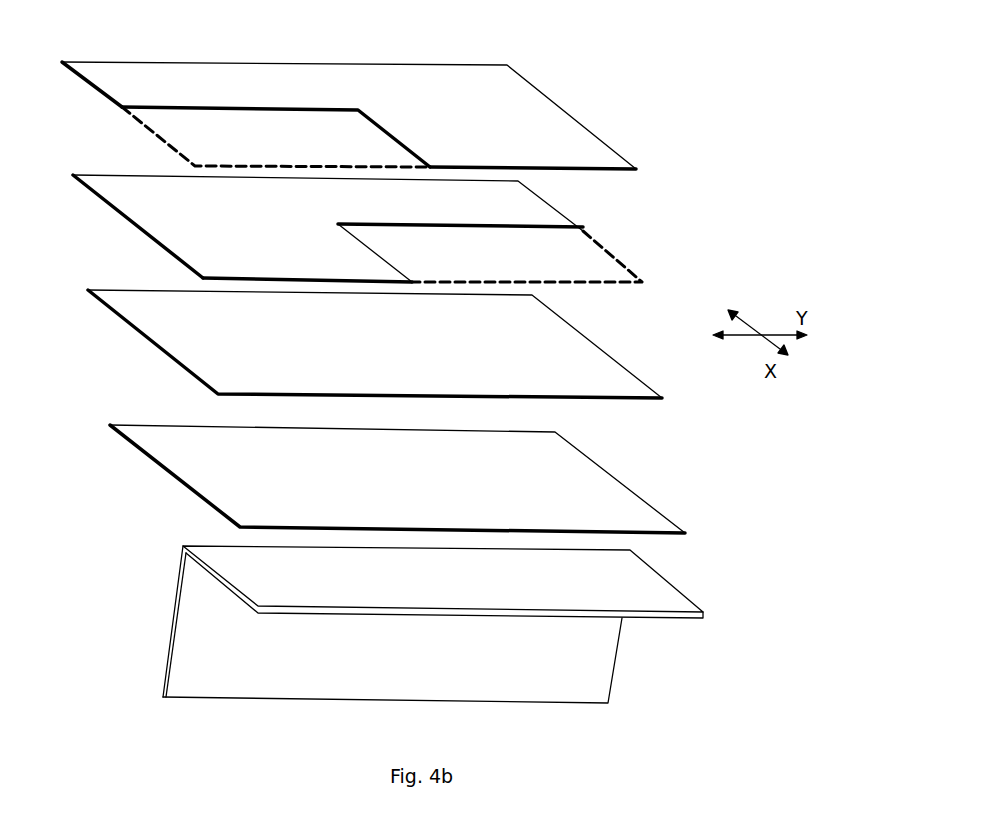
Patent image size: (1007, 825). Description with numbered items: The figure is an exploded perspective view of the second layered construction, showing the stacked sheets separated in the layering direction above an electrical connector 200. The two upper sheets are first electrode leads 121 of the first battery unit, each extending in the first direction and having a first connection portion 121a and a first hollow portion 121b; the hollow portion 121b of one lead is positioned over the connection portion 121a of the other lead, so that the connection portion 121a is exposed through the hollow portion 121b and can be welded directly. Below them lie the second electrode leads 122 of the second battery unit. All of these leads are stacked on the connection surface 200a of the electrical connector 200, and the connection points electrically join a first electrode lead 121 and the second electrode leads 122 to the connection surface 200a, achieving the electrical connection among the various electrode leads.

The first electrode lead 121 is at (125, 76).
The first connection portion 121a is at (517, 135).
The first hollow portion 121b is at (258, 136).
The second electrode lead 122 is at (152, 316).
The electrical connector 200 is at (213, 622).
The connection surface 200a is at (652, 592).